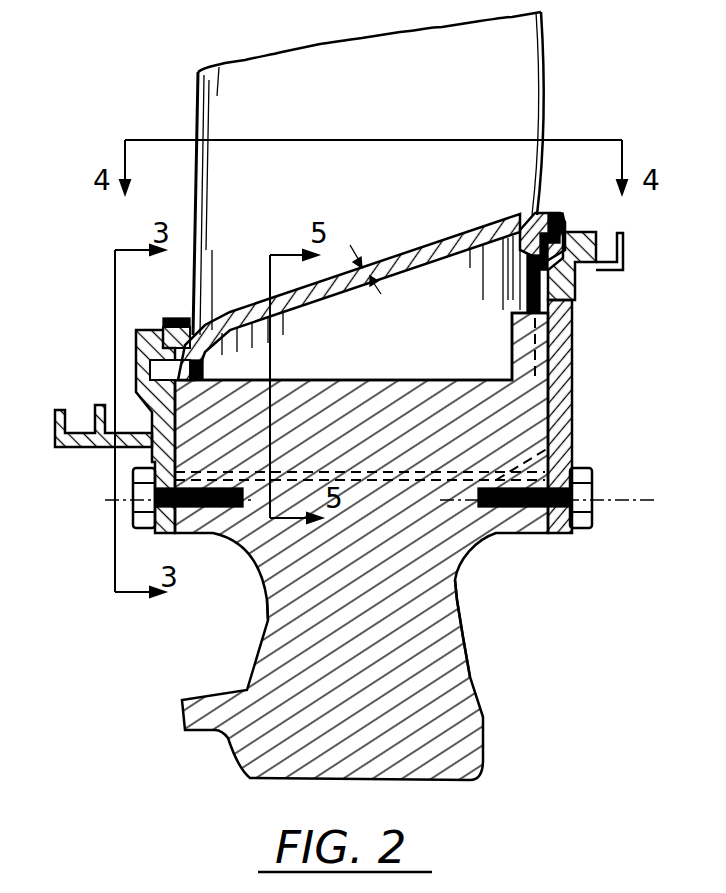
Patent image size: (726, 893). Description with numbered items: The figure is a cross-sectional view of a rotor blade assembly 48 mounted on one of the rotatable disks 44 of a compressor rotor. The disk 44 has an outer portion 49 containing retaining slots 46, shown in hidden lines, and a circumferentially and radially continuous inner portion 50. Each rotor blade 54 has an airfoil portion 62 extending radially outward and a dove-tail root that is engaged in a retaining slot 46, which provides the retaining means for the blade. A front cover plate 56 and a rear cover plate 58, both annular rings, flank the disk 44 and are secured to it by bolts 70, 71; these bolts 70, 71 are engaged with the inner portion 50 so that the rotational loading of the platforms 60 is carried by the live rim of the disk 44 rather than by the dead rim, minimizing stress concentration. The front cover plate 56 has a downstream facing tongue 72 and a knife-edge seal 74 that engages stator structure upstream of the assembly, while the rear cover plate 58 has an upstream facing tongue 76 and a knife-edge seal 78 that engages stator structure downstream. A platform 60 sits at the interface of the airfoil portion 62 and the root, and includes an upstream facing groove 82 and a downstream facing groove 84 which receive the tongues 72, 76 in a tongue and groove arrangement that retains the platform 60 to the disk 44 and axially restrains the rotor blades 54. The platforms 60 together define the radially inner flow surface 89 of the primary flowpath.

The rotatable disk 44 is at (470, 652).
The retaining slot 46 is at (550, 447).
The rotor blade assembly 48 is at (588, 112).
The outer portion 49 is at (505, 417).
The inner portion 50 is at (428, 625).
The rotor blade 54 is at (380, 114).
The front cover plate 56 is at (152, 330).
The rear cover plate 58 is at (573, 368).
The platform 60 is at (438, 240).
The airfoil portion 62 is at (195, 108).
The bolt 70 is at (130, 500).
The bolt 71 is at (594, 510).
The downstream facing tongue 72 is at (170, 318).
The knife-edge seal 74 is at (100, 407).
The upstream facing tongue 76 is at (576, 232).
The knife-edge seal 78 is at (620, 232).
The upstream facing groove 82 is at (216, 300).
The downstream facing groove 84 is at (526, 213).
The radially inner flow surface 89 is at (462, 233).